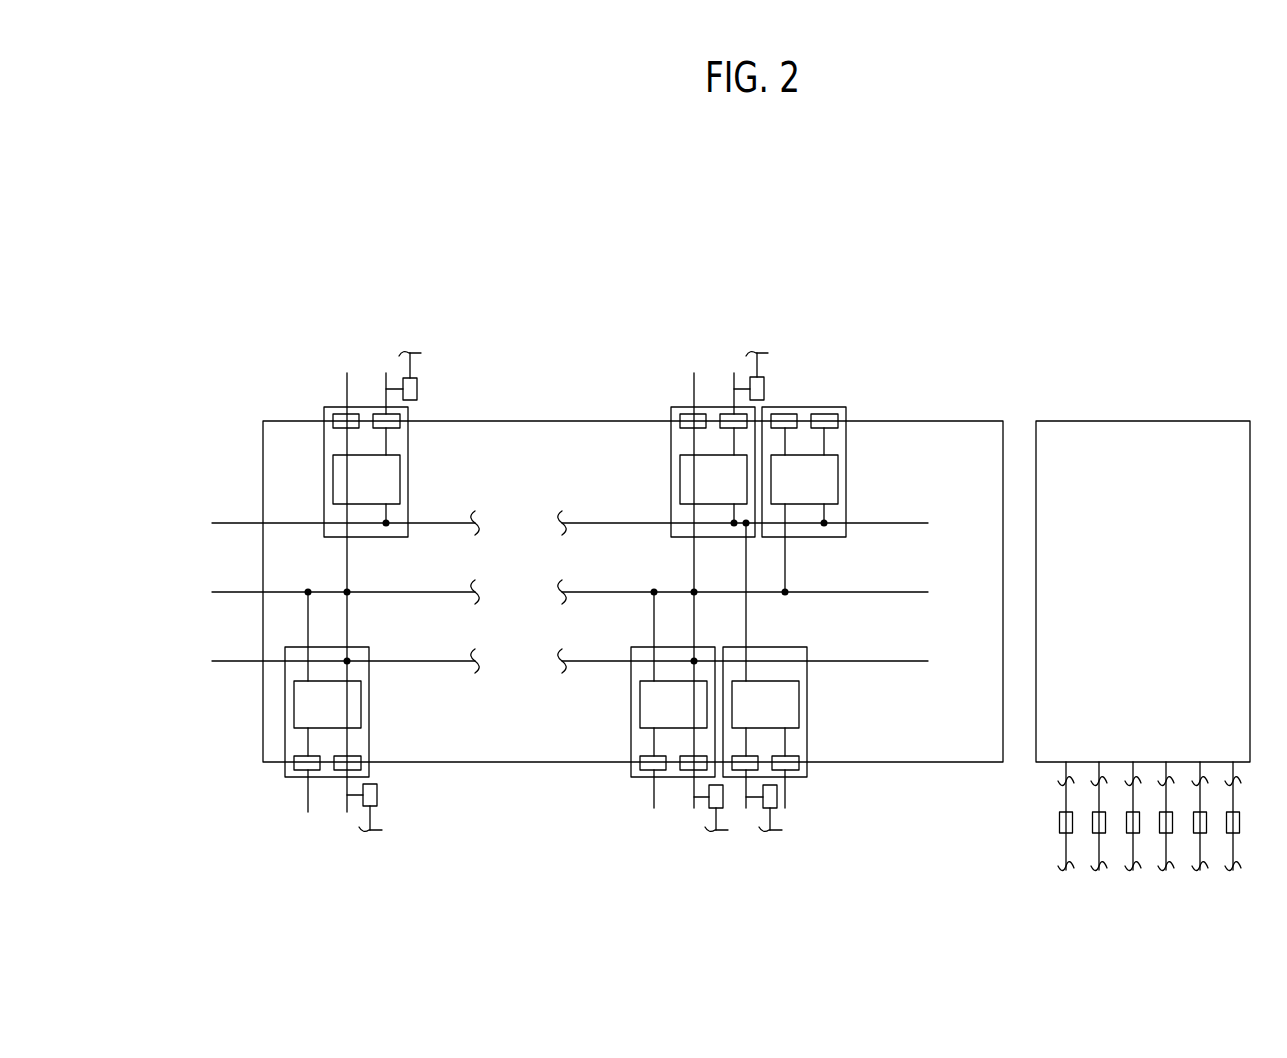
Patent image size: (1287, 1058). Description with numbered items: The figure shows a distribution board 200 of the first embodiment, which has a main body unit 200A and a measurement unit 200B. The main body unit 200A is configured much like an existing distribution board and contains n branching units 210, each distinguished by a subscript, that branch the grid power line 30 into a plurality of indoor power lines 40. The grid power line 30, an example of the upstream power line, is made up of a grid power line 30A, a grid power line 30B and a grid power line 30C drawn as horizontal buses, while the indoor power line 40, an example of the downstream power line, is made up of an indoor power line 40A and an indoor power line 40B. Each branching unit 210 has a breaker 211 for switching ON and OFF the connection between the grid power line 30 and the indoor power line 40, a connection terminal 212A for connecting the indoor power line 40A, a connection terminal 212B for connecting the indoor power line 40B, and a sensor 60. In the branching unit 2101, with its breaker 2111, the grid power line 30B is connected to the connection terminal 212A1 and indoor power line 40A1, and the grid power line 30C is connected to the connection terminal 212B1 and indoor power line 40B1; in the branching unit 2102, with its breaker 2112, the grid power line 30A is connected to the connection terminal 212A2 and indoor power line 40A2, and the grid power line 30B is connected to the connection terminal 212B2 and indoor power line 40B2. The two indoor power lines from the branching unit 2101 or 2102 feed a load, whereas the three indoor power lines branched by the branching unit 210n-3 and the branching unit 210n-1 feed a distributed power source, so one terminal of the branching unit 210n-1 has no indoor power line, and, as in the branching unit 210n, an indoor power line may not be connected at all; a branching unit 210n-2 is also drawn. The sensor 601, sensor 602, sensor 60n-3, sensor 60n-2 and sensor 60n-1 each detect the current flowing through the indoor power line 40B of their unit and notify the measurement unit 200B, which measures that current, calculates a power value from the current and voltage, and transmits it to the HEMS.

The distribution board 200 is at (735, 258).
The main body unit 200A is at (607, 421).
The measurement unit 200B is at (1136, 421).
The grid power line 30 is at (506, 589).
The grid power line 30A is at (232, 524).
The grid power line 30B is at (232, 592).
The grid power line 30C is at (232, 661).
The indoor power line 40 is at (304, 599).
The indoor power line 40A is at (269, 601).
The indoor power line 40B is at (357, 599).
The indoor power line 40A1 is at (308, 789).
The indoor power line 40A2 is at (347, 378).
The indoor power line 40B1 is at (347, 805).
The indoor power line 40B2 is at (385, 378).
The sensor 60 is at (1059, 825).
The sensor 601 is at (377, 798).
The sensor 602 is at (418, 385).
The sensor 60n-1 is at (778, 797).
The sensor 60n-2 is at (765, 390).
The sensor 60n-3 is at (723, 797).
The branching unit 210 is at (546, 592).
The branching unit 2101 is at (285, 745).
The branching unit 2102 is at (324, 447).
The branching unit 210n is at (846, 455).
The branching unit 210n-1 is at (807, 709).
The branching unit 210n-2 is at (672, 483).
The branching unit 210n-3 is at (630, 722).
The breaker 211 is at (273, 591).
The breaker 2111 is at (295, 706).
The breaker 2112 is at (333, 492).
The connection terminal 212A is at (273, 592).
The connection terminal 212A1 is at (295, 778).
The connection terminal 212A2 is at (338, 406).
The connection terminal 212B is at (435, 588).
The connection terminal 212B1 is at (370, 772).
The connection terminal 212B2 is at (420, 408).